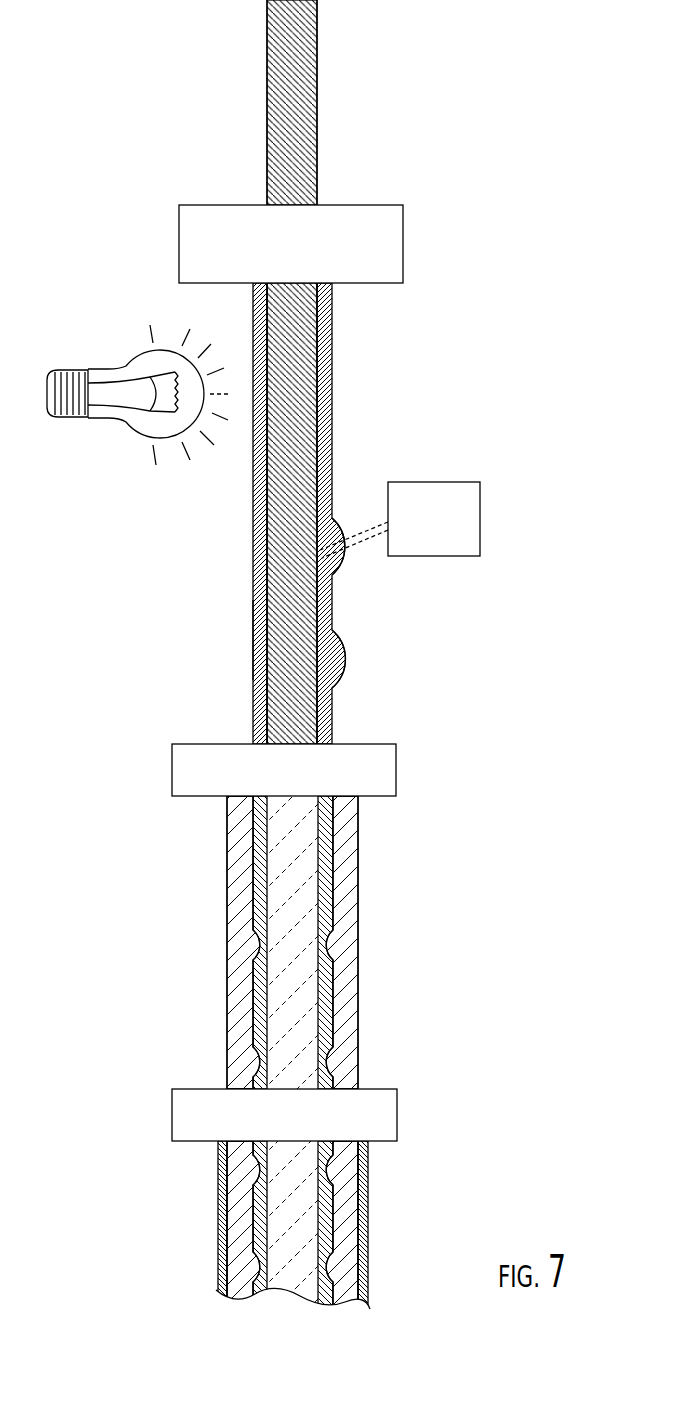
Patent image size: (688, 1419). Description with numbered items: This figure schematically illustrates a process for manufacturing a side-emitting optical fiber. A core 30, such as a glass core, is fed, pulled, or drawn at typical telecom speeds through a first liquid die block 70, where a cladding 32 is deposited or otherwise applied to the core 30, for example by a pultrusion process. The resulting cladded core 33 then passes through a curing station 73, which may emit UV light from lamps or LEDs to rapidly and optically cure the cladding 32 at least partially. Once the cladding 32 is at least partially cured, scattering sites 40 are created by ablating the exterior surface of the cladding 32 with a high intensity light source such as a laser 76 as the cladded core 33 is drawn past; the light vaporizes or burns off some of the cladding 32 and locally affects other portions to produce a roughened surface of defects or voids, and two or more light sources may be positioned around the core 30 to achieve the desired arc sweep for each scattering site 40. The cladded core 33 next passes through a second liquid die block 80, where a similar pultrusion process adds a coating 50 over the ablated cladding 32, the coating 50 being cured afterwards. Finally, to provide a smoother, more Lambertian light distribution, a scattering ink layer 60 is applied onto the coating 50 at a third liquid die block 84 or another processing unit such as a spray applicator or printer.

The core 30 is at (267, 105).
The cladding 32 is at (330, 347).
The cladded core 33 is at (236, 638).
The scattering sites 40 is at (326, 659).
The coating 50 is at (240, 888).
The scattering ink layer 60 is at (217, 1222).
The first liquid die block 70 is at (178, 240).
The curing station 73 is at (140, 363).
The laser 76 is at (473, 511).
The second liquid die block 80 is at (385, 766).
The third liquid die block 84 is at (397, 1118).